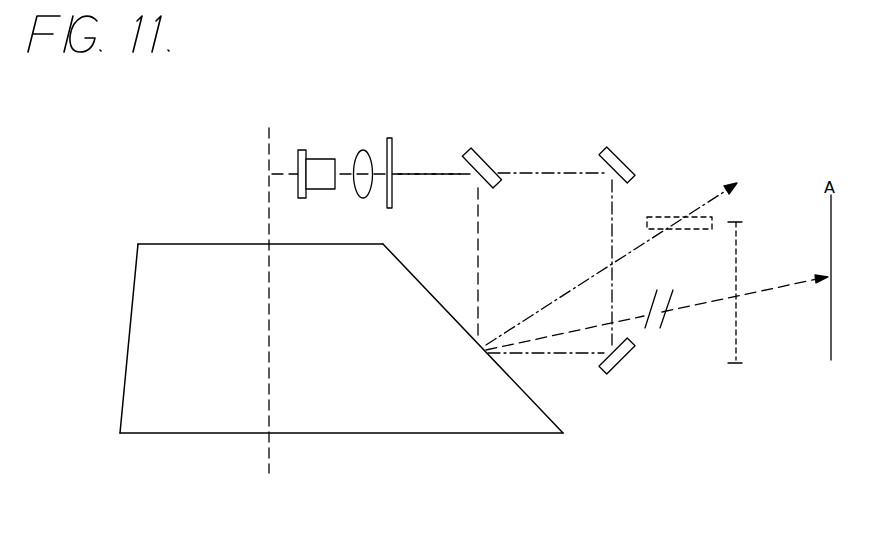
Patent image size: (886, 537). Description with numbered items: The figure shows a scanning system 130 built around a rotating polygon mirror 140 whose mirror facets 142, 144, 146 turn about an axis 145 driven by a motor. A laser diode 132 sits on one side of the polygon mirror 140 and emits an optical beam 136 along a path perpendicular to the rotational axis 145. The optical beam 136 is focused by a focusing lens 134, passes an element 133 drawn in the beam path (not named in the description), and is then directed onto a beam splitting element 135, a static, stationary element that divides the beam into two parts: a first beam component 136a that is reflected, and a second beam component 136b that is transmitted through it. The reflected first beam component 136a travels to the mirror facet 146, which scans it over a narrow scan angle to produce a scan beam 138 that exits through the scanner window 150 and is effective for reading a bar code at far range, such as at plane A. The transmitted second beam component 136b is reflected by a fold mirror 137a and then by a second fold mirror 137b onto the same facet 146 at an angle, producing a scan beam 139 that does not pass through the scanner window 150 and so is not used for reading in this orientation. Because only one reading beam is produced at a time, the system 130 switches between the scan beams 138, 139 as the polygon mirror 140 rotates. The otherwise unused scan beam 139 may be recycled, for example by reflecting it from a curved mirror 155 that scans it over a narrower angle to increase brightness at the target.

The scanning system 130 is at (586, 86).
The laser diode 132 is at (320, 159).
The plate / filter 133 is at (393, 139).
The focusing lens 134 is at (364, 150).
The beam splitting element 135 is at (485, 160).
The optical beam 136 is at (419, 176).
The first beam component 136a is at (480, 248).
The second beam component 136b is at (565, 170).
The fold mirror 137a is at (630, 163).
The second fold mirror 137b is at (622, 363).
The scan beam 138 is at (757, 292).
The scan beam 139 is at (623, 258).
The rotating polygon mirror 140 is at (148, 434).
The mirror facet 142 is at (125, 377).
The mirror facet 144 is at (193, 434).
The axis 145 is at (270, 456).
The mirror facet 146 is at (529, 396).
The scanner window 150 is at (737, 223).
The mirror 155 is at (660, 217).